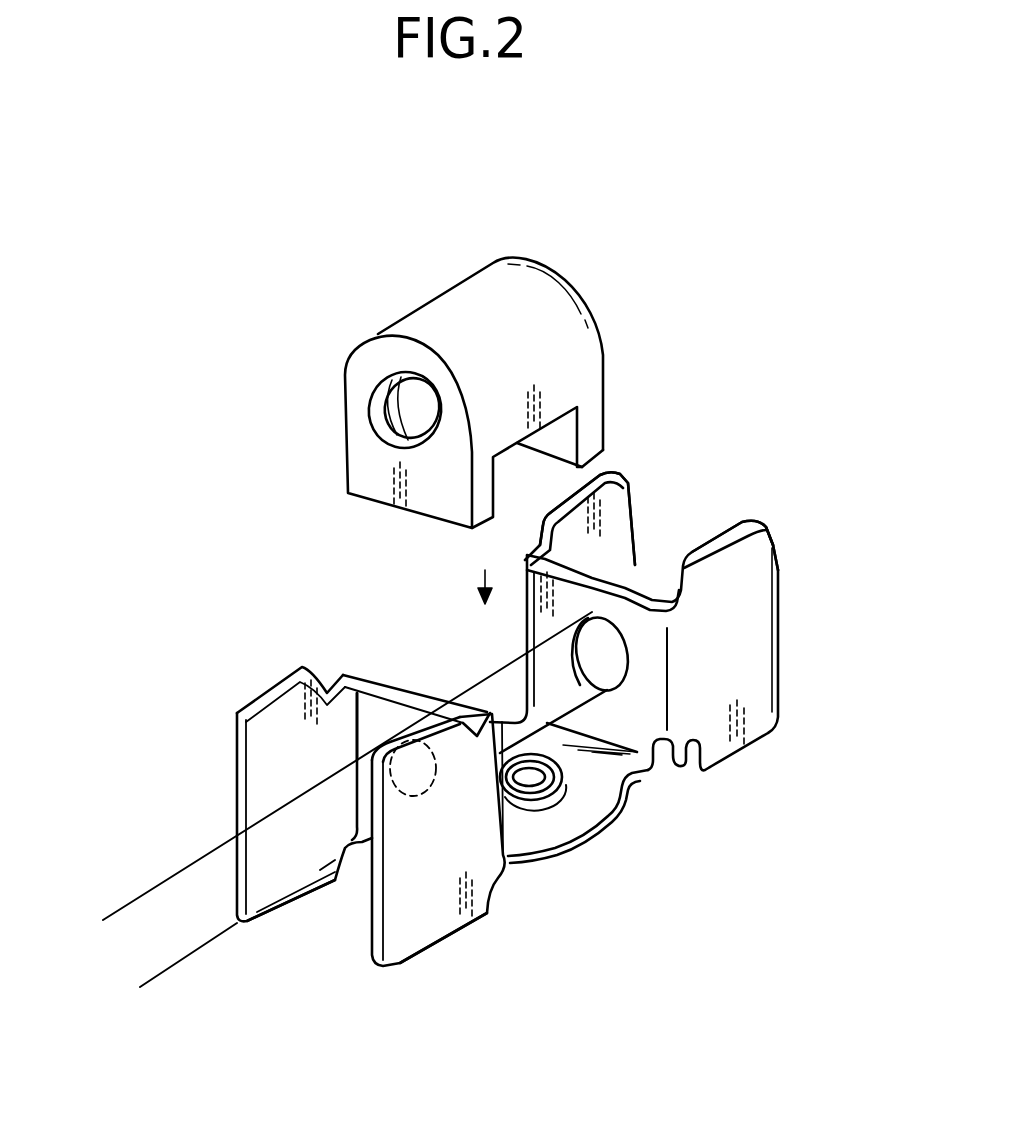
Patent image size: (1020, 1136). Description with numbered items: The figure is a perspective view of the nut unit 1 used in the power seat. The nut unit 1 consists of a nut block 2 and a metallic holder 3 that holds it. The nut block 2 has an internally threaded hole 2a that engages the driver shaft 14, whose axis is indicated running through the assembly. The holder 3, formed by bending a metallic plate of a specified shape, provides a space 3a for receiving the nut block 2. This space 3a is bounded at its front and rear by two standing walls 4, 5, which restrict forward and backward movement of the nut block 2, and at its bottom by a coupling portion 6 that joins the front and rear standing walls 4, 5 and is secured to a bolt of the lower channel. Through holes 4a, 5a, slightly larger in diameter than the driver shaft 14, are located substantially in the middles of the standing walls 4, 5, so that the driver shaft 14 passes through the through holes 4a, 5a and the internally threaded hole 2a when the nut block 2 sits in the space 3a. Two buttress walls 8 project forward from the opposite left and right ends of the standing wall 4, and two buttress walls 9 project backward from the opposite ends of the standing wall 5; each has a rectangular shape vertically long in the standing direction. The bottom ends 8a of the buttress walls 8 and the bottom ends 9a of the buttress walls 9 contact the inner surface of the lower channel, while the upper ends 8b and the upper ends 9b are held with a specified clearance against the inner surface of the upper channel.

The nut unit 1 is at (620, 250).
The nut block 2 is at (455, 303).
The internally threaded hole 2a is at (397, 412).
The metallic holder 3 is at (628, 818).
The space 3a is at (384, 628).
The standing wall 4 is at (638, 565).
The through hole 4a is at (605, 660).
The standing wall 5 is at (365, 666).
The through hole 5a is at (358, 743).
The coupling portion 6 is at (568, 818).
The buttress walls 8 is at (637, 497).
The bottom ends 8a is at (760, 737).
The upper ends 8b is at (600, 458).
The buttress walls 9 is at (233, 747).
The bottom ends 9a is at (310, 897).
The upper ends 9b is at (253, 697).
The driver shaft 14 is at (187, 950).